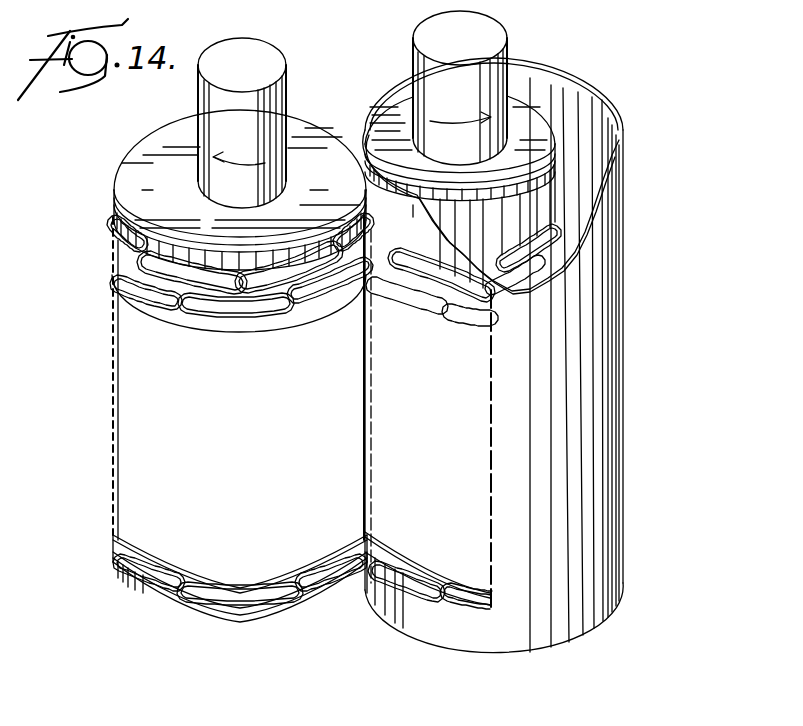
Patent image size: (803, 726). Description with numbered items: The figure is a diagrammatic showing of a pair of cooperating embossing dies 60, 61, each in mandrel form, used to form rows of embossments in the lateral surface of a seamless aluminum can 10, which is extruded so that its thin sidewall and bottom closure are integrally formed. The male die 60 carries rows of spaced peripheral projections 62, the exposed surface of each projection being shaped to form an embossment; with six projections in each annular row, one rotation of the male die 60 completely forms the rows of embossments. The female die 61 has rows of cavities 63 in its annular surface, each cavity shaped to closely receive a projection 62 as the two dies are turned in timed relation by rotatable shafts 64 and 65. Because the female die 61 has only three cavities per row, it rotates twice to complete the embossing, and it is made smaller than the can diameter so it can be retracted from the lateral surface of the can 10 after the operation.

The can 10 is at (627, 203).
The male embossing die 60 is at (321, 120).
The female embossing die 61 is at (542, 105).
The peripheral projections 62 is at (197, 282).
The cavities 63 is at (512, 262).
The rotatable shaft 64 is at (279, 88).
The rotatable shaft 65 is at (505, 55).